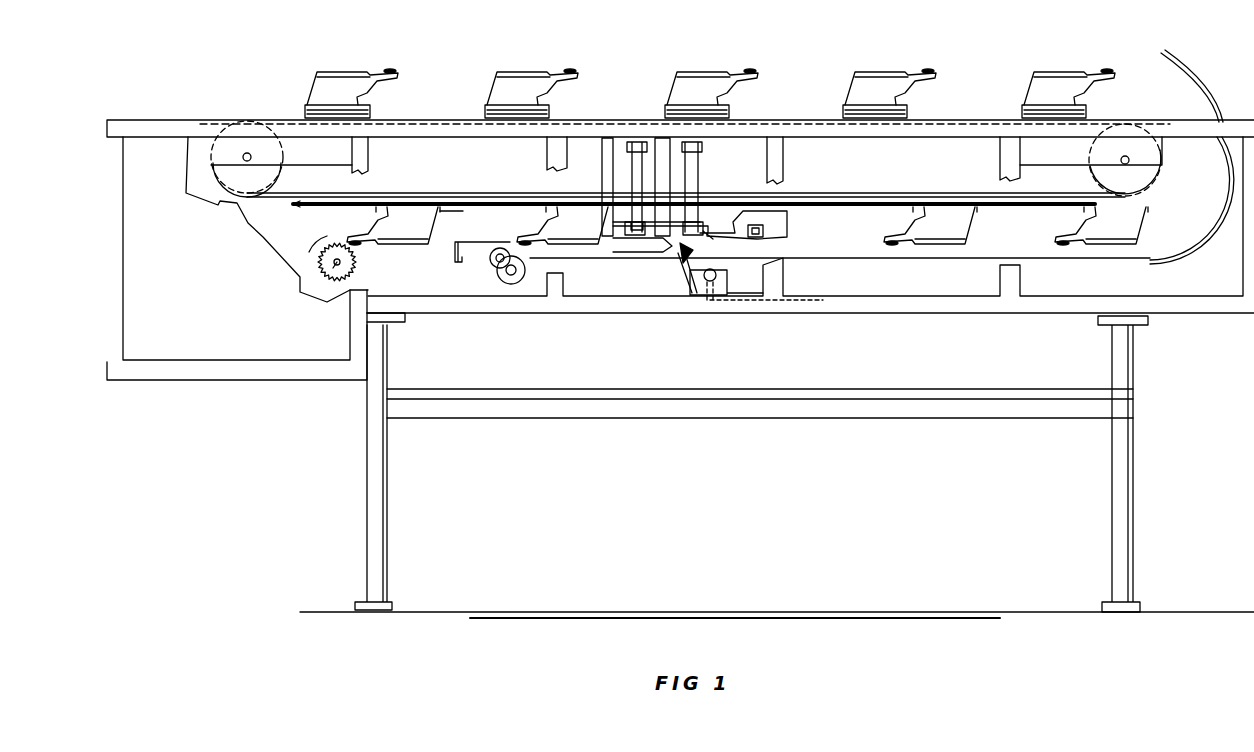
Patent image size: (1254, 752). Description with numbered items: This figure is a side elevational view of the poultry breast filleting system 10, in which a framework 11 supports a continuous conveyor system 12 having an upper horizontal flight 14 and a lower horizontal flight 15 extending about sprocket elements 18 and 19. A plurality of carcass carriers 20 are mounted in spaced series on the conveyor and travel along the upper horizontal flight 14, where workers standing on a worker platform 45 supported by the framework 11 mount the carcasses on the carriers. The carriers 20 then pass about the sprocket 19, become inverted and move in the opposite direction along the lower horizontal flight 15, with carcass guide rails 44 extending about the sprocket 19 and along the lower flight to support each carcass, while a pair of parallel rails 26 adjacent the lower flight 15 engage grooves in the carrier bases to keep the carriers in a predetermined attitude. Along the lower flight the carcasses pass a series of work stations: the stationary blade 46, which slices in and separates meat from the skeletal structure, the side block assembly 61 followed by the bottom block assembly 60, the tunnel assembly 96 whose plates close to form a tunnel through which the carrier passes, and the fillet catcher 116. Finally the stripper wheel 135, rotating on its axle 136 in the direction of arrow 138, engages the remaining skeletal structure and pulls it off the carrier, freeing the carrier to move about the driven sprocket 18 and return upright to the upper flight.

The poultry breast filleting system 10 is at (981, 31).
The framework 11 is at (394, 500).
The continuous conveyor system 12 is at (472, 190).
The upper horizontal flight 14 is at (584, 119).
The lower horizontal flight 15 is at (818, 195).
The sprocket element 18 is at (226, 178).
The sprocket element 19 is at (1150, 178).
The carcass carrier 20 is at (343, 73).
The parallel rails 26 is at (462, 206).
The carcass guide rails 44 is at (1197, 78).
The worker platform 45 is at (803, 388).
The stationary blade 46 is at (766, 230).
The bottom block assembly 60 is at (676, 269).
The side block assembly 61 is at (705, 222).
The tunnel assembly 96 is at (630, 252).
The fillet catcher 116 is at (490, 277).
The stripper wheel 135 is at (331, 270).
The axle 136 is at (340, 261).
The arrow 138 is at (330, 233).